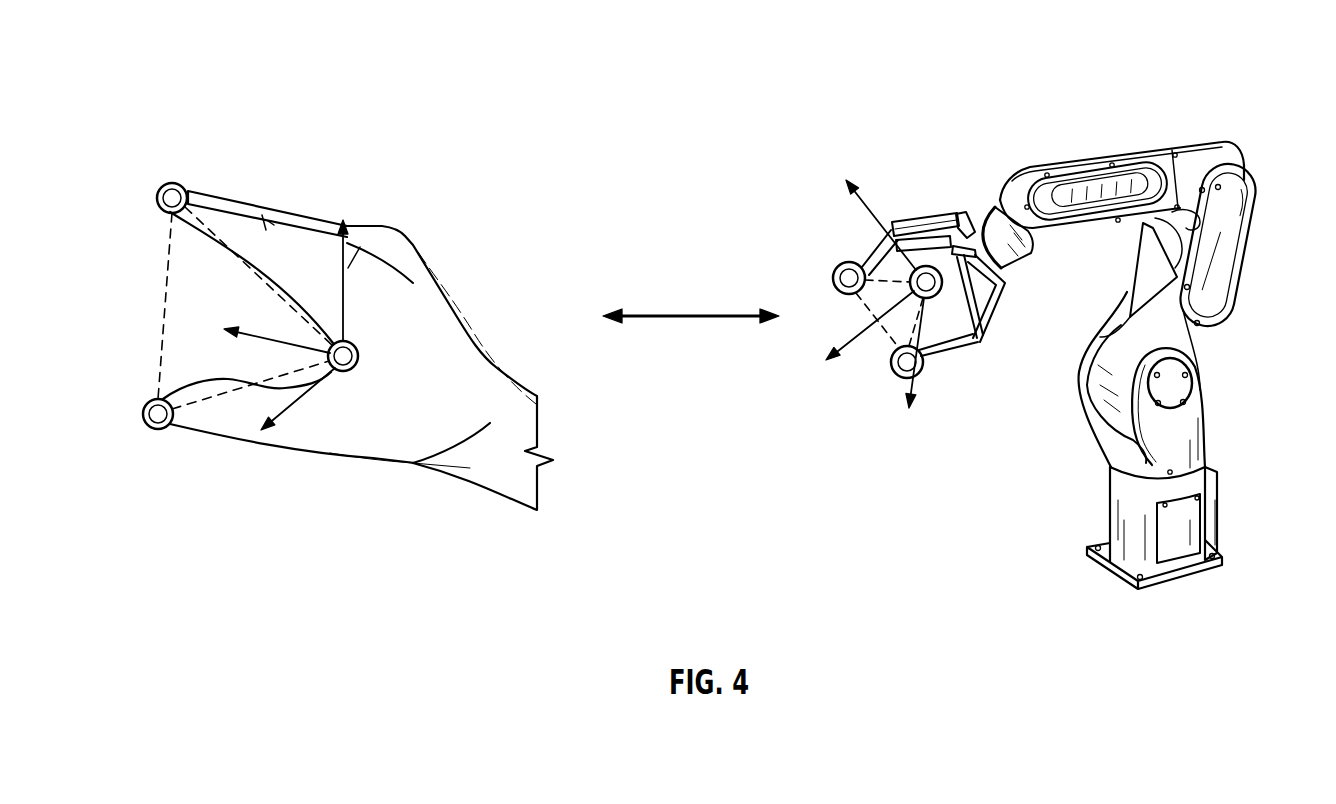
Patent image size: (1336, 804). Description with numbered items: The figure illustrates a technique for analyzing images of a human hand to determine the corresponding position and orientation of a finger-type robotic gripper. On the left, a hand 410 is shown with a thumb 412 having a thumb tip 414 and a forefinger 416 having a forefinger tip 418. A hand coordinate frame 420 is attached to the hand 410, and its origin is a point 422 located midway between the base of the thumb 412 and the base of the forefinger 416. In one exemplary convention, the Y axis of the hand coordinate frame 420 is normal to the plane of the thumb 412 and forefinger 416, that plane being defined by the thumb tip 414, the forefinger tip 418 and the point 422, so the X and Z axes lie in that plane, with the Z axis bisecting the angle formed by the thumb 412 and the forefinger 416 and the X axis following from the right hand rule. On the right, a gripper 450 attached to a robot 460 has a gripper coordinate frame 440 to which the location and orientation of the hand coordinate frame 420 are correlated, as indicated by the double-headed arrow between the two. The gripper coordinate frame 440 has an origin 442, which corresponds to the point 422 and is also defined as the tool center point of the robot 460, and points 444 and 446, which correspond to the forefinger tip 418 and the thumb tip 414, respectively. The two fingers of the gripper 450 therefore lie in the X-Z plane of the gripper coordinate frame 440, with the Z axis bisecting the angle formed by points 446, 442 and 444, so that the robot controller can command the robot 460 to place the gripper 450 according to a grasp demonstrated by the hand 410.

The hand 410 is at (437, 303).
The thumb 412 is at (203, 413).
The thumb tip 414 is at (143, 412).
The forefinger 416 is at (262, 228).
The forefinger tip 418 is at (176, 185).
The hand coordinate frame 420 is at (297, 420).
The point 422 is at (357, 353).
The gripper coordinate frame 440 is at (931, 255).
The origin 442 is at (913, 272).
The point 444 is at (838, 270).
The point 446 is at (892, 365).
The gripper 450 is at (995, 340).
The robot 460 is at (1228, 370).